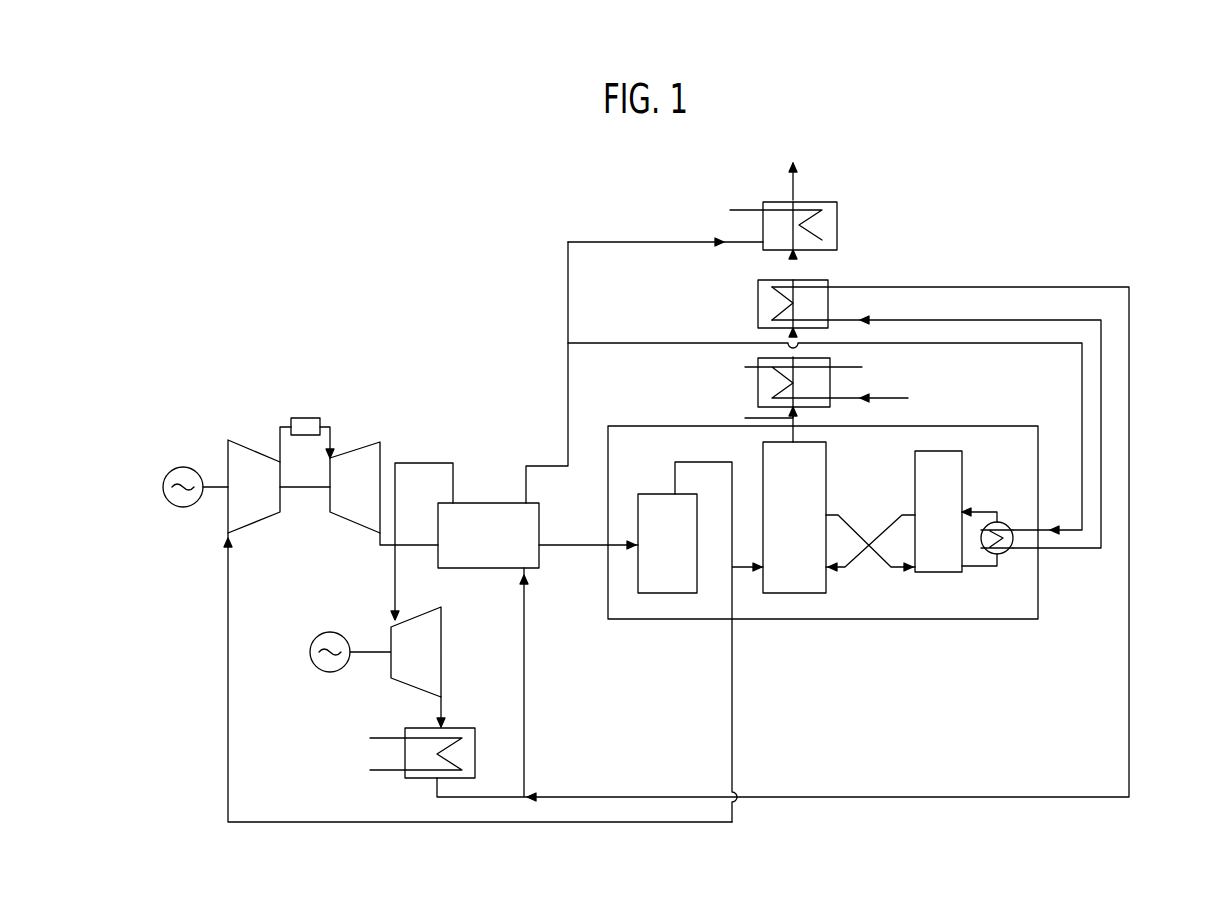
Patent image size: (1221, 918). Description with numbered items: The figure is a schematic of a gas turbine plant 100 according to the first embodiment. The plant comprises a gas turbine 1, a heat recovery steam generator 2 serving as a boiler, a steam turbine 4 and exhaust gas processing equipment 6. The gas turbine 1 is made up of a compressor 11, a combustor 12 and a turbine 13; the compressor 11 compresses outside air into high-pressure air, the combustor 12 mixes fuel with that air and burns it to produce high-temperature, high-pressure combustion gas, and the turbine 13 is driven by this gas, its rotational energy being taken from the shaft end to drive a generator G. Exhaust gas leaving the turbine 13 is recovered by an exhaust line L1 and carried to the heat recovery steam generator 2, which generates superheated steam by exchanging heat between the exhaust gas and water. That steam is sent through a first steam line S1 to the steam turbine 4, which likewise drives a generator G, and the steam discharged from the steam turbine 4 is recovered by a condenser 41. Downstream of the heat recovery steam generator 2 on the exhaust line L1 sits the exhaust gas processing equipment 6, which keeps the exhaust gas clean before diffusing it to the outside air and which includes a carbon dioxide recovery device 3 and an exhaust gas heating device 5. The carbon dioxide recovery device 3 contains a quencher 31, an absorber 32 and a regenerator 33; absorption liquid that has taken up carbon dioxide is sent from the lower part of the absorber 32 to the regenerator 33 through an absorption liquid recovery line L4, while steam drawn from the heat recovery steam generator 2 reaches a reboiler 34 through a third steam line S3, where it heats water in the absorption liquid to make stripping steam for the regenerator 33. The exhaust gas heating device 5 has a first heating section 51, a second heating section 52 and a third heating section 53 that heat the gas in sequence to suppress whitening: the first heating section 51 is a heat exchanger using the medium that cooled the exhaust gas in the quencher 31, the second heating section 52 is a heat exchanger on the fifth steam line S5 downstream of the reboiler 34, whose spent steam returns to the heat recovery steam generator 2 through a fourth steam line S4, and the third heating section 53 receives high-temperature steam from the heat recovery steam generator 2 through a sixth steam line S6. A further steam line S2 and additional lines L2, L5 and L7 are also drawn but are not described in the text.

The gas turbine plant 100 is at (167, 322).
The gas turbine 1 is at (108, 460).
The compressor 11 is at (255, 452).
The combustor 12 is at (305, 418).
The turbine 13 is at (360, 452).
The generator G is at (172, 500).
The heat recovery steam generator 2 is at (490, 503).
The carbon dioxide recovery device 3 is at (1048, 624).
The quencher 31 is at (668, 595).
The absorber 32 is at (797, 595).
The regenerator 33 is at (935, 574).
The reboiler 34 is at (1000, 556).
The steam turbine 4 is at (443, 660).
The condenser 41 is at (415, 780).
The exhaust gas heating device 5 is at (851, 188).
The first heating section 51 is at (758, 361).
The second heating section 52 is at (758, 296).
The third heating section 53 is at (762, 205).
The exhaust gas processing equipment 6 is at (1020, 205).
The exhaust line L1 is at (418, 547).
The return line L2 is at (608, 822).
The absorption liquid recovery line L4 is at (845, 570).
The lean absorbent line L5 is at (895, 570).
The reboiler steam line L7 is at (990, 512).
The first steam line S1 is at (427, 463).
The steam line S2 is at (567, 390).
The third steam line S3 is at (1083, 436).
The fourth steam line S4 is at (1130, 367).
The fifth steam line S5 is at (1102, 500).
The sixth steam line S6 is at (625, 240).